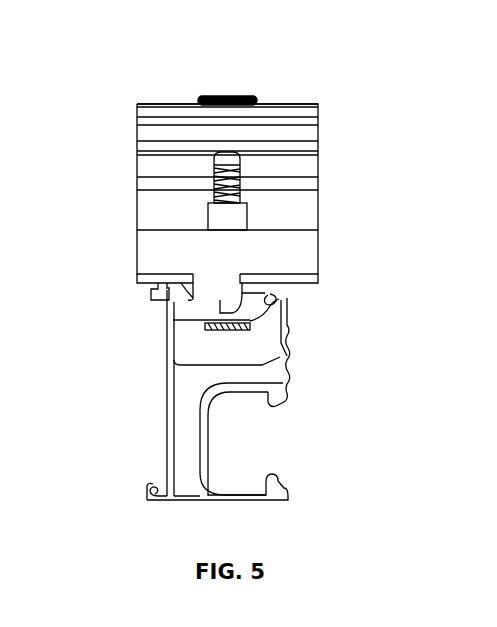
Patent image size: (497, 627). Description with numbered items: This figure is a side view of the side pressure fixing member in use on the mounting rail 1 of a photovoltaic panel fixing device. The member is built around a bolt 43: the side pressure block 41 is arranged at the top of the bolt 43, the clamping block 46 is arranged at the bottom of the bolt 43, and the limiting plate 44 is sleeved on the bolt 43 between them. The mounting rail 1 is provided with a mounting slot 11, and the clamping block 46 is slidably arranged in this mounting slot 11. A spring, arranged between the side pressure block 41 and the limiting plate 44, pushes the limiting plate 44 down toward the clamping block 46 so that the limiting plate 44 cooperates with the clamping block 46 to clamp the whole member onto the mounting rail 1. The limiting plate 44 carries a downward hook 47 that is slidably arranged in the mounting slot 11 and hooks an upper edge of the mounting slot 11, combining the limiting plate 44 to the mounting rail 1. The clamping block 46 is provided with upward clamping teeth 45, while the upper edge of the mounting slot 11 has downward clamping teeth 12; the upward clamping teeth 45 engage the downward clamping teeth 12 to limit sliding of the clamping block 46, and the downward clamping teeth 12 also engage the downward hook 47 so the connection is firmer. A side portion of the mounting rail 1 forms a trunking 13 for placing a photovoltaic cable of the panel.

The mounting rail 1 is at (172, 363).
The mounting slot 11 is at (240, 356).
The downward clamping teeth 12 is at (263, 297).
The trunking 13 is at (212, 442).
The side pressure block 41 is at (318, 108).
The bolt 43 is at (200, 98).
The limiting plate 44 is at (200, 252).
The upward clamping teeth 45 is at (274, 302).
The clamping block 46 is at (248, 298).
The downward hook 47 is at (207, 323).